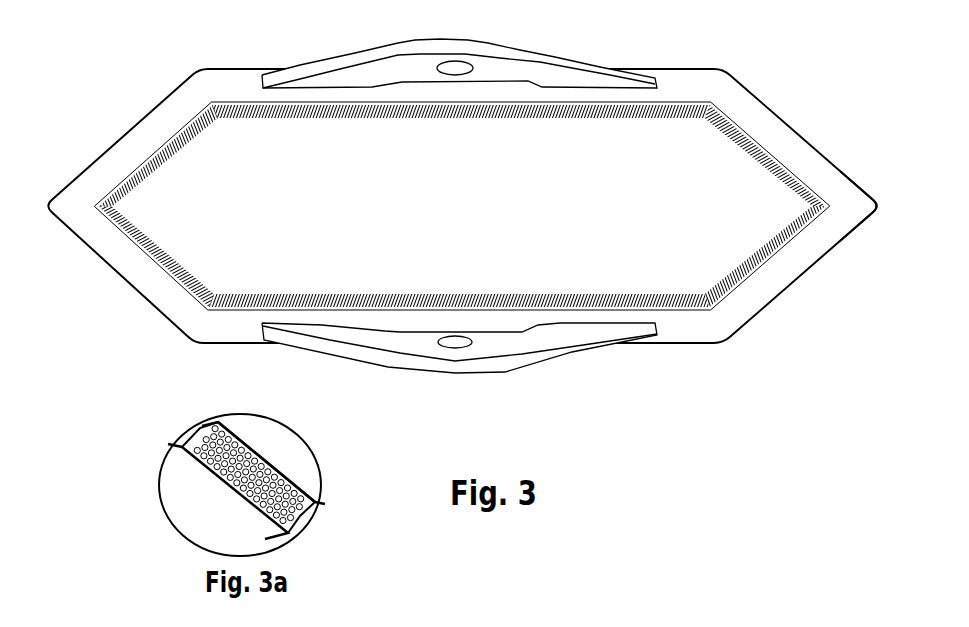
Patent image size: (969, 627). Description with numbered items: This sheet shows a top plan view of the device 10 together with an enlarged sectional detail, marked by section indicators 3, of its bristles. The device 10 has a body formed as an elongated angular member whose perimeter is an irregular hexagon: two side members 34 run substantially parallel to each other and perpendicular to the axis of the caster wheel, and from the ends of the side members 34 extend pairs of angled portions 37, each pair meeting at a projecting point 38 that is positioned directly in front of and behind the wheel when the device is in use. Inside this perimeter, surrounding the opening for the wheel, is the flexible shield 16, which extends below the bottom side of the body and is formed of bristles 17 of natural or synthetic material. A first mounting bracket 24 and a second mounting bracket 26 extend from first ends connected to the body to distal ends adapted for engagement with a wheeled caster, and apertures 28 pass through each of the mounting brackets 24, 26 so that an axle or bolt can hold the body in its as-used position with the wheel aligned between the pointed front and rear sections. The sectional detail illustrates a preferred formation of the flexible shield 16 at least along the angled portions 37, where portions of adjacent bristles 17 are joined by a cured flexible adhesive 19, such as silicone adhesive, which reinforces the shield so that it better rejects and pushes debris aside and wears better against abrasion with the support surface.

In FIG. 3, the section line indicator 3 is at (68, 182).
In FIG. 3, the device 10 is at (455, 217).
In FIG. 3, the flexible shield 16 is at (167, 240).
In FIG. 3A, the flexible shield 16 is at (200, 460).
In FIG. 3, the bristles 17 is at (437, 290).
In FIG. 3A, the bristles 17 is at (245, 458).
In FIG. 3A, the adhesive 19 is at (220, 482).
In FIG. 3, the first mounting bracket 24 is at (575, 352).
In FIG. 3, the second mounting bracket 26 is at (572, 66).
In FIG. 3, the apertures 28 is at (472, 68).
In FIG. 3, the side members 34 is at (667, 82).
In FIG. 3, the angled portions 37 is at (148, 128).
In FIG. 3, the projecting point 38 is at (868, 207).